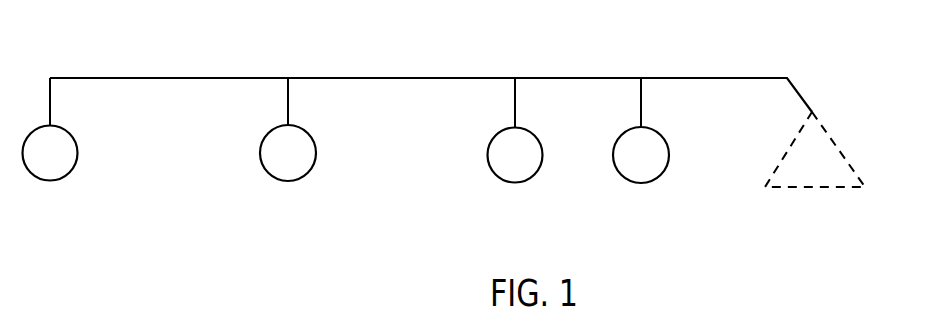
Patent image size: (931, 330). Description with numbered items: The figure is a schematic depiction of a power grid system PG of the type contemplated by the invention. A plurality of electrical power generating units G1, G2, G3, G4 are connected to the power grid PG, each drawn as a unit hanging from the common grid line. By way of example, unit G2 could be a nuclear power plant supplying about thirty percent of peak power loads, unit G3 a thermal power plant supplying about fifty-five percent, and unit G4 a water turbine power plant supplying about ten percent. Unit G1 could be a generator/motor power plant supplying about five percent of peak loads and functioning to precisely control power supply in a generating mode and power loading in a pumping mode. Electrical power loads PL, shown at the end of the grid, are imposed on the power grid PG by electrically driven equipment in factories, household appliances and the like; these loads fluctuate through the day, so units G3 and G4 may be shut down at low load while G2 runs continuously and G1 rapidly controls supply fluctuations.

The generator/motor power plant G1 is at (50, 129).
The nuclear power plant G2 is at (288, 129).
The thermal power plant G3 is at (515, 130).
The water turbine power plant G4 is at (641, 130).
The power grid PG is at (612, 55).
The electrical power loads PL is at (815, 149).